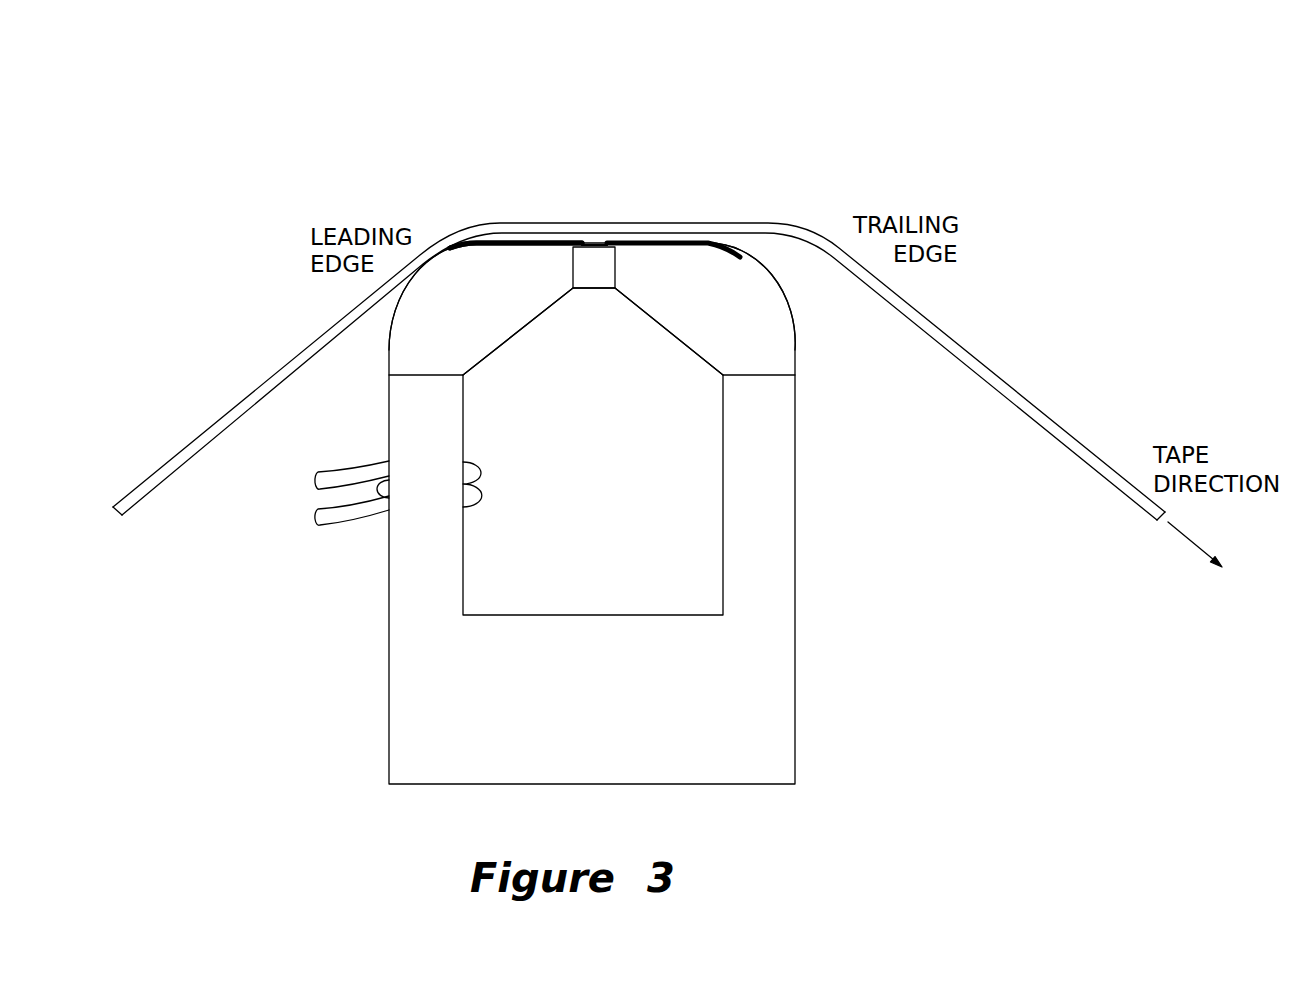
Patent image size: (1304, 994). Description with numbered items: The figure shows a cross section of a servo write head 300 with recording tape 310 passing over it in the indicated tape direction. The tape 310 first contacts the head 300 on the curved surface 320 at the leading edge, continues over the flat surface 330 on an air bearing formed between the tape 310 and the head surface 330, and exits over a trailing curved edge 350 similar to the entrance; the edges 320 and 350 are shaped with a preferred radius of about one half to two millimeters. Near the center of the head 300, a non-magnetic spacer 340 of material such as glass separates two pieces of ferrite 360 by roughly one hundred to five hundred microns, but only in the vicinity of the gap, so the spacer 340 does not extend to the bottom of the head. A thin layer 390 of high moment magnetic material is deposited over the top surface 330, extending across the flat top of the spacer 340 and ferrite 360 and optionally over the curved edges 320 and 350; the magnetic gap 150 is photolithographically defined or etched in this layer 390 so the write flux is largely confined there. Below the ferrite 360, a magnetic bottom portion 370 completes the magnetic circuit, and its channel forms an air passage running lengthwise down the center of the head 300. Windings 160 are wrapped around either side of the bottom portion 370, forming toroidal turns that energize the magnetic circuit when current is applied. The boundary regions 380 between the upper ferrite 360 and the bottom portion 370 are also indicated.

The servo write head 300 is at (1013, 117).
The recording tape 310 is at (1012, 383).
The curved surface 320 is at (411, 301).
The flat surface 330 is at (541, 241).
The non-magnetic spacer 340 is at (590, 300).
The trailing curved edge 350 is at (754, 273).
The ferrite 360 is at (452, 363).
The bottom portion 370 is at (603, 692).
The outrigger edge 380 is at (389, 376).
The layer of high moment magnetic material 390 is at (531, 255).
The magnetic gap 150 is at (586, 232).
The windings 160 is at (362, 466).